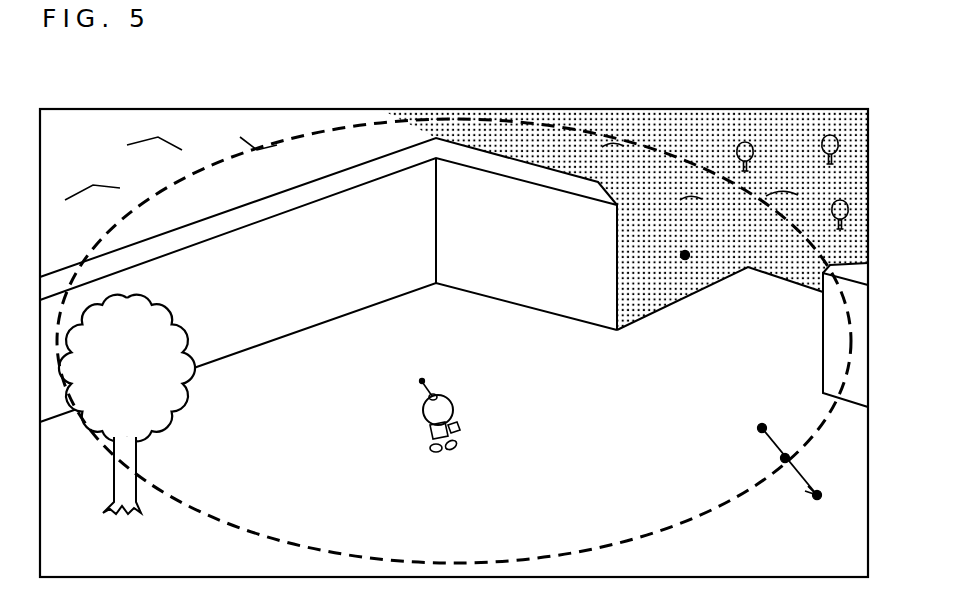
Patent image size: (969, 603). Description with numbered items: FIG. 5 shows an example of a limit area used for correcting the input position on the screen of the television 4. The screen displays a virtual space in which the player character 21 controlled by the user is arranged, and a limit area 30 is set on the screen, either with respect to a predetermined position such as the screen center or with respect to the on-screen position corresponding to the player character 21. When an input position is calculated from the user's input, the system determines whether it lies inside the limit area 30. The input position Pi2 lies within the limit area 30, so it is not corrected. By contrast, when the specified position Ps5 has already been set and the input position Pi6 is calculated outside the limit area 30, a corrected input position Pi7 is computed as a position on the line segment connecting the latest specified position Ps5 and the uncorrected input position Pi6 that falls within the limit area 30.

The television 4 is at (760, 109).
The player character 21 is at (427, 430).
The limit area 30 is at (703, 517).
The input position Pi2 is at (701, 244).
The specified position Ps5 is at (769, 448).
The corrected input position Pi7 is at (762, 457).
The uncorrected input position Pi6 is at (829, 507).